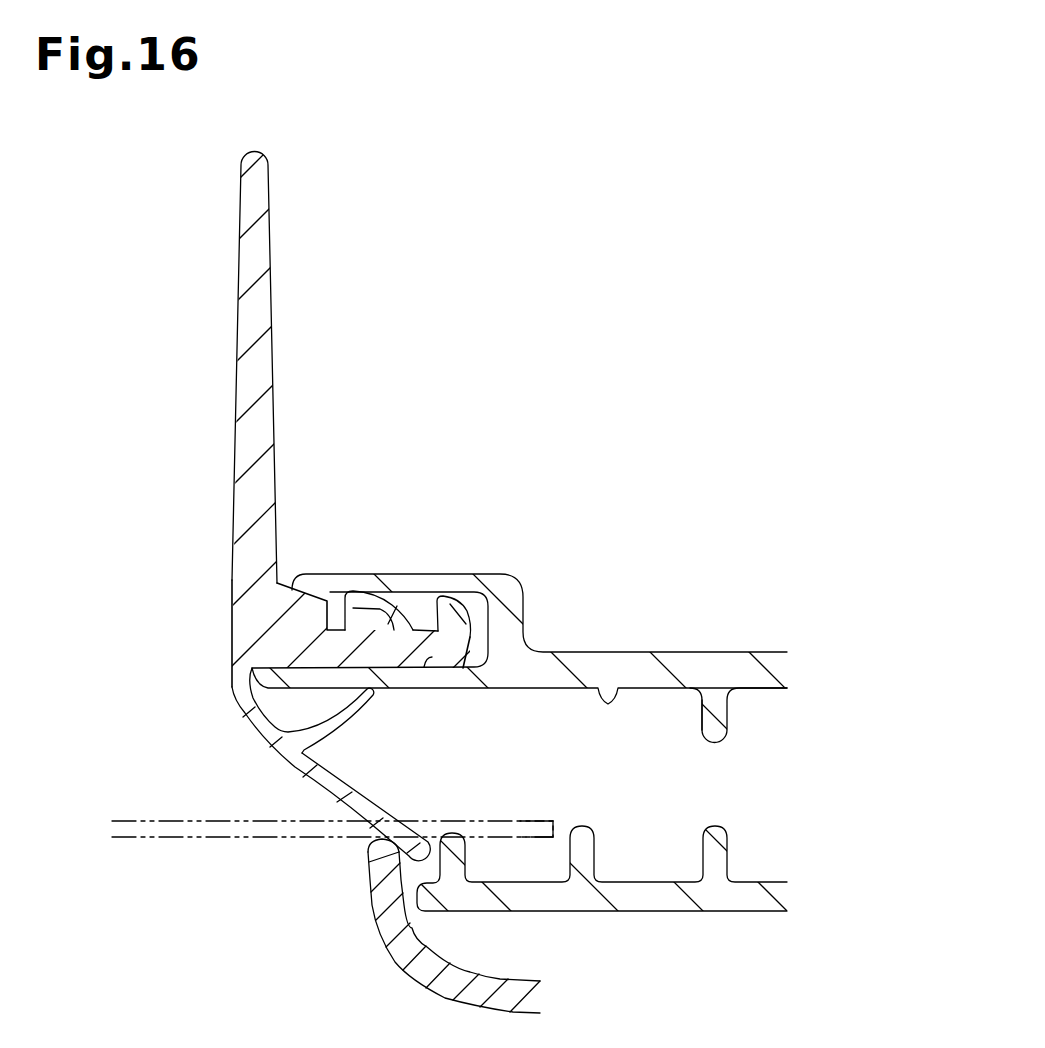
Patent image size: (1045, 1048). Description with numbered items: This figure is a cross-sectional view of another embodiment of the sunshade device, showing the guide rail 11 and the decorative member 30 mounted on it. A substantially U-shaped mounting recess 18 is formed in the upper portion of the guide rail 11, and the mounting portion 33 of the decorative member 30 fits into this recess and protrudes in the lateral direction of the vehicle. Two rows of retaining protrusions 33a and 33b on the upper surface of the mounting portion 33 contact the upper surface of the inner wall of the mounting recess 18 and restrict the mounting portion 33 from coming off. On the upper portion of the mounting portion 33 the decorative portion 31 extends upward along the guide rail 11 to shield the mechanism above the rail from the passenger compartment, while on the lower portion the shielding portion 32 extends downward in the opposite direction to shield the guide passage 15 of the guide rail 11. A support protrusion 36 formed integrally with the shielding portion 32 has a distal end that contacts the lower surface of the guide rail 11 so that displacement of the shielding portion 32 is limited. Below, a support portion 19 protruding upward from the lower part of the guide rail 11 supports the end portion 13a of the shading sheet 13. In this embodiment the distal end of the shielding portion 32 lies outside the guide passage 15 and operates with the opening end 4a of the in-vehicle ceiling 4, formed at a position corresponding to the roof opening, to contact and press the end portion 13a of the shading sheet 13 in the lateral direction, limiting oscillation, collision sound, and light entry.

The decorative member 30 is at (238, 199).
The decorative portion 31 is at (237, 330).
The shielding portion 32 is at (363, 795).
The mounting portion 33 is at (232, 628).
The retaining protrusion 33a is at (335, 598).
The retaining protrusion 33b is at (427, 593).
The support protrusion 36 is at (353, 722).
The guide passage 15 is at (616, 688).
The mounting recess 18 is at (431, 657).
The guide rail 11 is at (763, 690).
The support portion 19 is at (471, 858).
The shading sheet 13 is at (210, 838).
The end portion 13a is at (527, 820).
The in-vehicle ceiling 4 is at (385, 940).
The opening end 4a is at (363, 850).